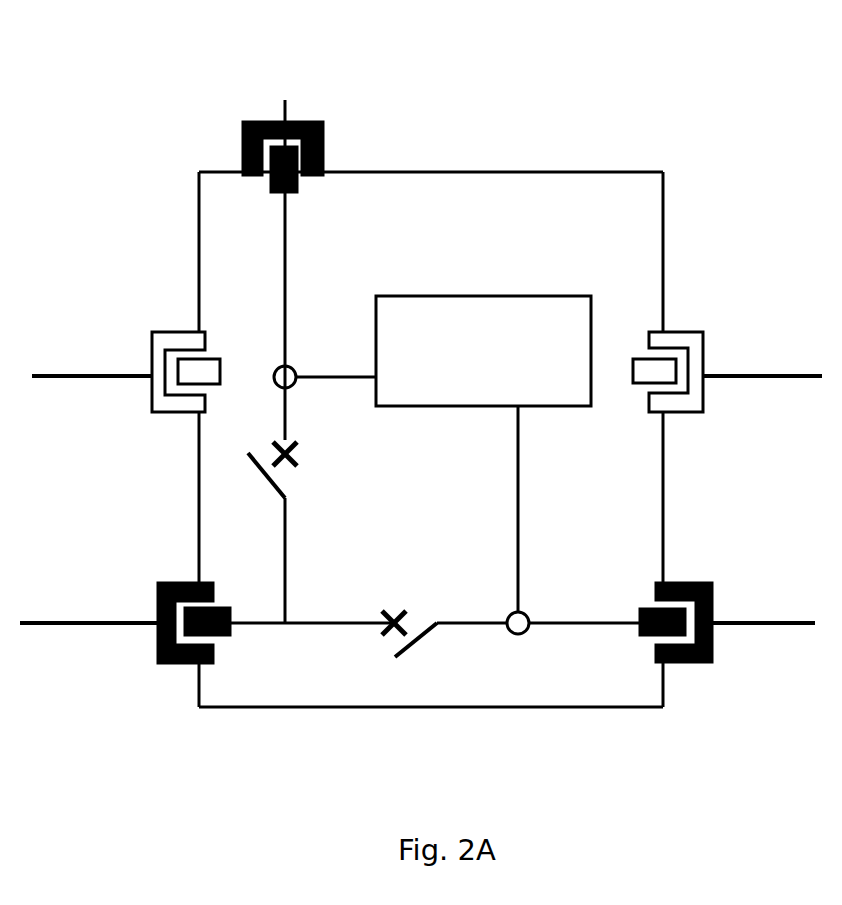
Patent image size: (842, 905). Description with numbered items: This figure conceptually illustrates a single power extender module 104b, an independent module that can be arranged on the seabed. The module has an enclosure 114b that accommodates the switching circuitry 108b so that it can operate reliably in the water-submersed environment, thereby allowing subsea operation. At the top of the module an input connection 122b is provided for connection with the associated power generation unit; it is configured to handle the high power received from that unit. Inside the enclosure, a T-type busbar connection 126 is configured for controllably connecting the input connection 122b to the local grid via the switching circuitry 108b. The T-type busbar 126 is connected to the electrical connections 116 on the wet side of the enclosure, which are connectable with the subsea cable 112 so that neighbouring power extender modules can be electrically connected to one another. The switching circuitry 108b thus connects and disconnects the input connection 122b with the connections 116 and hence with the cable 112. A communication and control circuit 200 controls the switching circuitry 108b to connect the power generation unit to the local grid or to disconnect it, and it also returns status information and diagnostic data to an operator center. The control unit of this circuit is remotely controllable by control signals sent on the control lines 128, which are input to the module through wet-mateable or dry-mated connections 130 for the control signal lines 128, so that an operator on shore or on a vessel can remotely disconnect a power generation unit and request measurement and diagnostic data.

The power extender module 104b is at (600, 236).
The enclosure 114b is at (511, 159).
The input connection 122b is at (229, 114).
The wet-mateable or dry-mated connections 130 is at (148, 303).
The control lines 128 is at (73, 357).
The electrical connections 116 is at (150, 551).
The subsea cable 112 is at (59, 603).
The communication and control circuit 200 is at (515, 379).
The switching circuitry 108b is at (329, 468).
The T-type busbar connection 126 is at (320, 574).